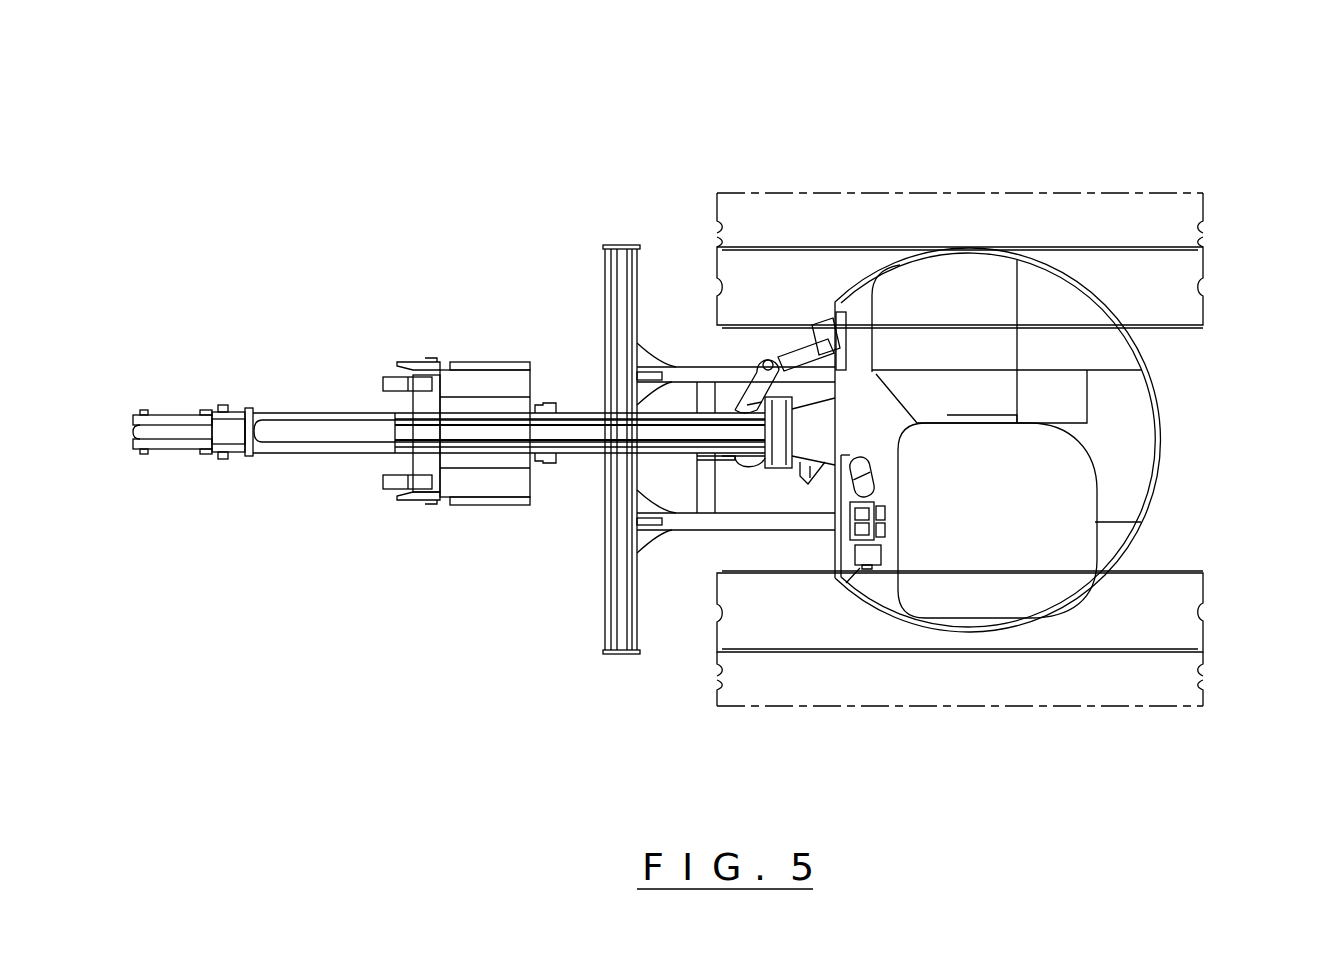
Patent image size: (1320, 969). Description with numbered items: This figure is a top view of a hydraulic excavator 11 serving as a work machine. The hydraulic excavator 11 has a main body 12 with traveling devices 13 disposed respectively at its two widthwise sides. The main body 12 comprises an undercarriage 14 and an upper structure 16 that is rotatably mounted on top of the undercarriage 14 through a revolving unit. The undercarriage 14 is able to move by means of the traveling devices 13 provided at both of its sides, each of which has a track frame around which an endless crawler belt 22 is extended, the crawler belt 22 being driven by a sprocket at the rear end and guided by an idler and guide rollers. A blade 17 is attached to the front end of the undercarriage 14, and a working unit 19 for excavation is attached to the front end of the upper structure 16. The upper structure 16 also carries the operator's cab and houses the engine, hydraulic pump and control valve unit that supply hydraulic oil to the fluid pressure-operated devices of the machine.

The hydraulic excavator 11 is at (773, 79).
The main body 12 is at (1172, 373).
The traveling devices 13 is at (1216, 267).
The undercarriage 14 is at (1226, 301).
The upper structure 16 is at (1160, 432).
The blade 17 is at (605, 637).
The working unit 19 is at (294, 412).
The endless crawler belt 22 is at (1206, 326).